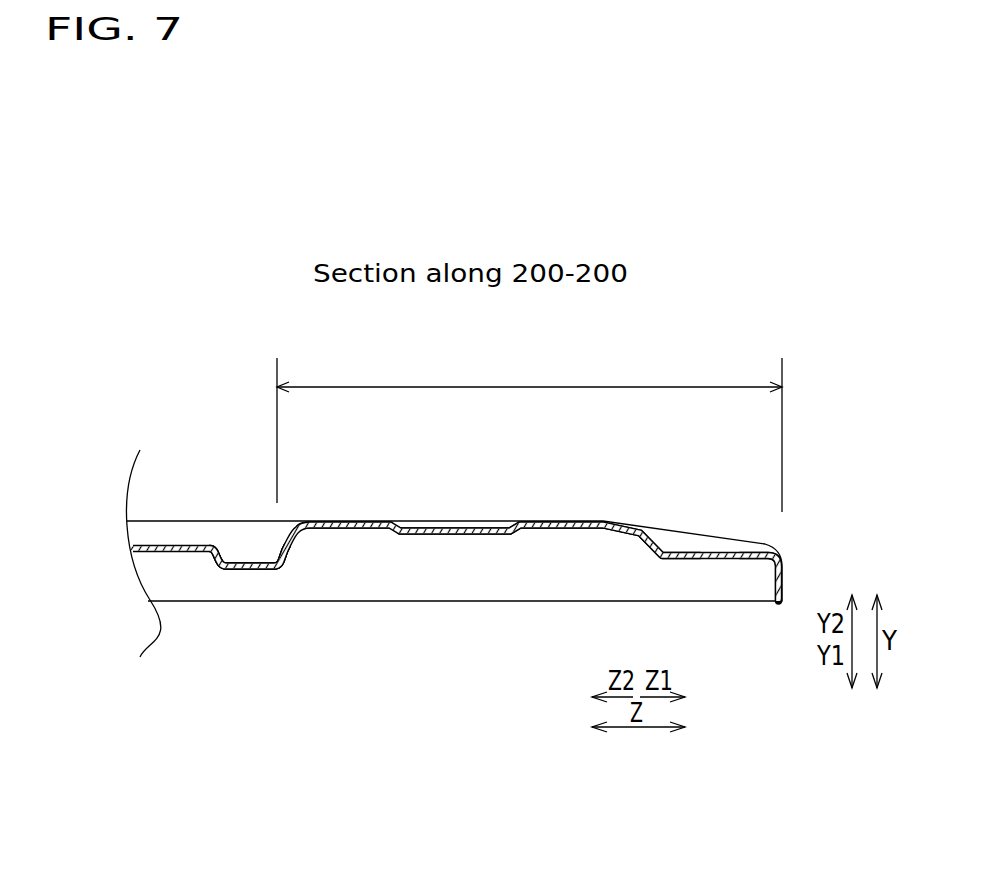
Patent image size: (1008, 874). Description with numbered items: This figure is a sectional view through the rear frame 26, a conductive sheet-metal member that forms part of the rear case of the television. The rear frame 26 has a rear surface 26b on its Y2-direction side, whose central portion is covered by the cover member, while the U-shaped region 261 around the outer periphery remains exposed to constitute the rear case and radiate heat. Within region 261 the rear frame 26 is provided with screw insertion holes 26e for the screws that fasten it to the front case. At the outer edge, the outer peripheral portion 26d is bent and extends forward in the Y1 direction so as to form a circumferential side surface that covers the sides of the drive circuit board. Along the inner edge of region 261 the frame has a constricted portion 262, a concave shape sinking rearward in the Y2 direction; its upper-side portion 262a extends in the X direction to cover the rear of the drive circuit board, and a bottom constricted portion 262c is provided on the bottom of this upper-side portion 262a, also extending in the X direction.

The rear frame 26 is at (190, 544).
The rear surface 26b is at (338, 523).
The outer peripheral portion 26d is at (783, 573).
The screw insertion hole 26e is at (712, 550).
The region 261 is at (529, 434).
The constricted portion 262 is at (242, 606).
The upper-side portion of the constricted portion 262a is at (290, 549).
The bottom constricted portion 262c is at (495, 522).